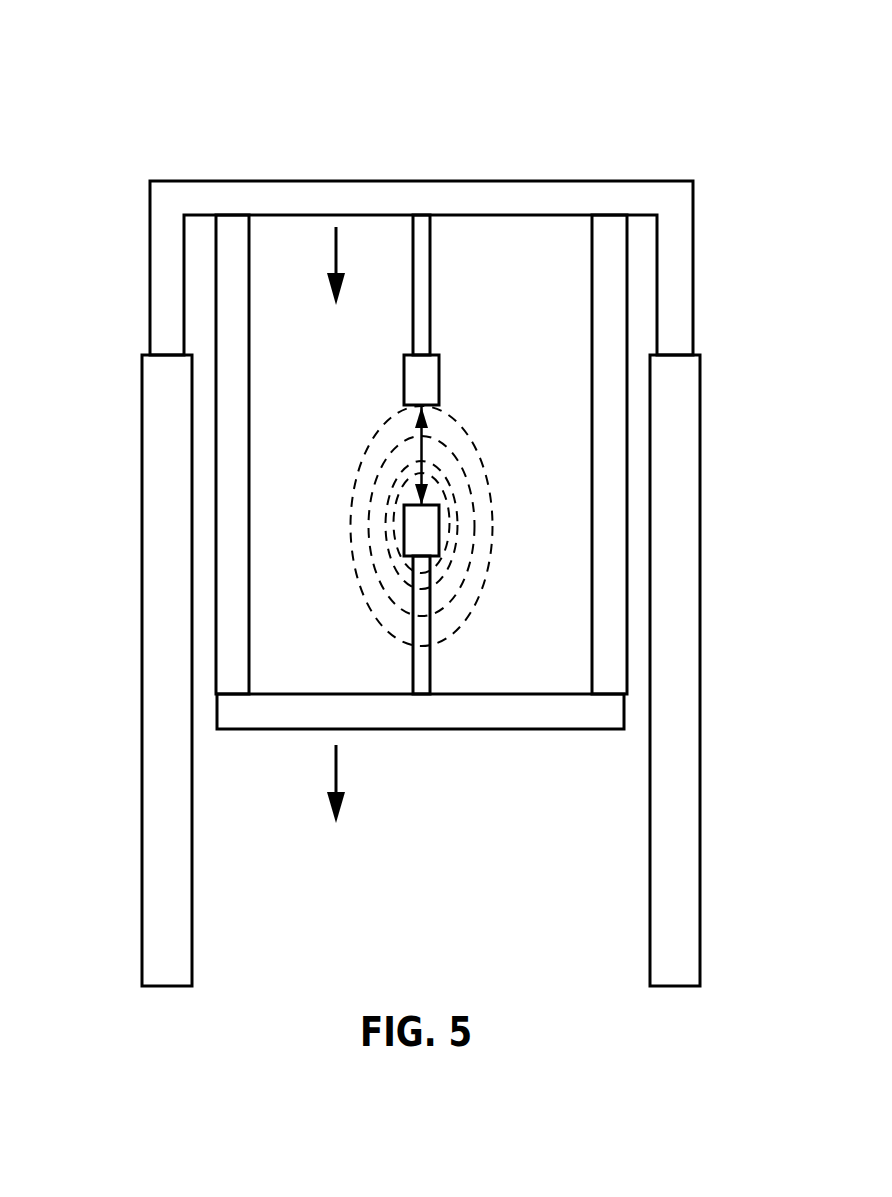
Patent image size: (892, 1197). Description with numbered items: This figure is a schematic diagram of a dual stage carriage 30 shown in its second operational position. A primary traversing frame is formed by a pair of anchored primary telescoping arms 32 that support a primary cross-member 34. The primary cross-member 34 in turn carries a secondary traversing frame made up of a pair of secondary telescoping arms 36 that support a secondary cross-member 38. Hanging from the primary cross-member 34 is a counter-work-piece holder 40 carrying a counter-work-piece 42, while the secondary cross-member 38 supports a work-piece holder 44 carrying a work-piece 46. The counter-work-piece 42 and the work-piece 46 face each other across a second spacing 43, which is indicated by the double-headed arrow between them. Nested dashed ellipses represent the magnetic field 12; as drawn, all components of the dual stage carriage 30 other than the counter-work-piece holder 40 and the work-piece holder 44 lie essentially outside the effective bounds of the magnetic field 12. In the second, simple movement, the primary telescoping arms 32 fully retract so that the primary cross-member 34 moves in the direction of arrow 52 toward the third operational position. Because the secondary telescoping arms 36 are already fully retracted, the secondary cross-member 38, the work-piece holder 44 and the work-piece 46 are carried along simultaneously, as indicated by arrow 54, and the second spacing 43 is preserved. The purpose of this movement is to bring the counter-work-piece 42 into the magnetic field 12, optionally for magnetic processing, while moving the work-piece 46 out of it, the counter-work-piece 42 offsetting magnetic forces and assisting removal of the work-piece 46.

The dual stage carriage 30 is at (712, 80).
The primary cross-member 34 is at (458, 180).
The primary telescoping arms 32 is at (141, 478).
The secondary telescoping arms 36 is at (250, 386).
The secondary cross-member 38 is at (563, 731).
The counter-work-piece holder 40 is at (430, 279).
The counter-work-piece 42 is at (440, 382).
The second spacing 43 is at (424, 465).
The work-piece 46 is at (440, 512).
The work-piece holder 44 is at (430, 668).
The magnetic field 12 is at (490, 572).
The arrow 52 is at (337, 254).
The arrow 54 is at (334, 773).